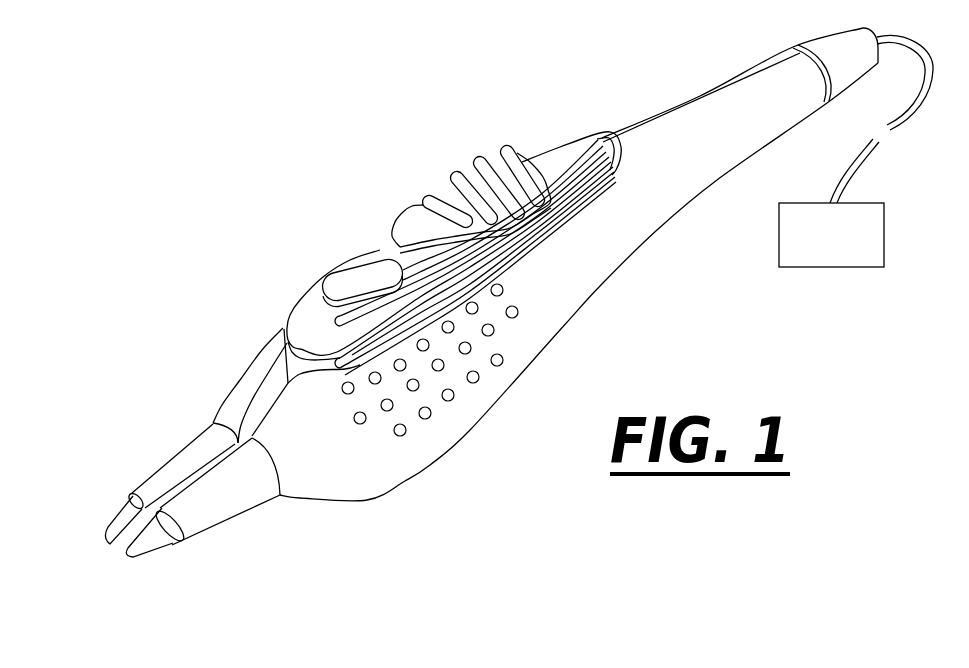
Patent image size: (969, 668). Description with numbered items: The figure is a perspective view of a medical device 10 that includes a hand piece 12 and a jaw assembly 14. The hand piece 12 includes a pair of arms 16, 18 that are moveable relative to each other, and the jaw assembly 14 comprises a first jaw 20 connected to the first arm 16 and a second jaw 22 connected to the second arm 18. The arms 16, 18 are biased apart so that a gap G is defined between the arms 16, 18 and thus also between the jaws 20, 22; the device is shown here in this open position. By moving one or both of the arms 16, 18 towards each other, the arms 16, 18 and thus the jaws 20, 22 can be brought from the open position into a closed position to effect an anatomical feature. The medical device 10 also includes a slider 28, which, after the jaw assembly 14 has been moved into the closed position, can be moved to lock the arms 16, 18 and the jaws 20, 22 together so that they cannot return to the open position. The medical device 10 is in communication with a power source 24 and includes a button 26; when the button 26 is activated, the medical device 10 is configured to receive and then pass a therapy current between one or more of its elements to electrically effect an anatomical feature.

The medical device 10 is at (333, 112).
The hand piece 12 is at (650, 130).
The jaw assembly 14 is at (124, 400).
The first arm 16 is at (362, 479).
The second arm 18 is at (245, 377).
The first jaw 20 is at (103, 540).
The second jaw 22 is at (148, 556).
The power source 24 is at (844, 254).
The button 26 is at (353, 280).
The slider 28 is at (478, 180).
The gap G is at (187, 478).